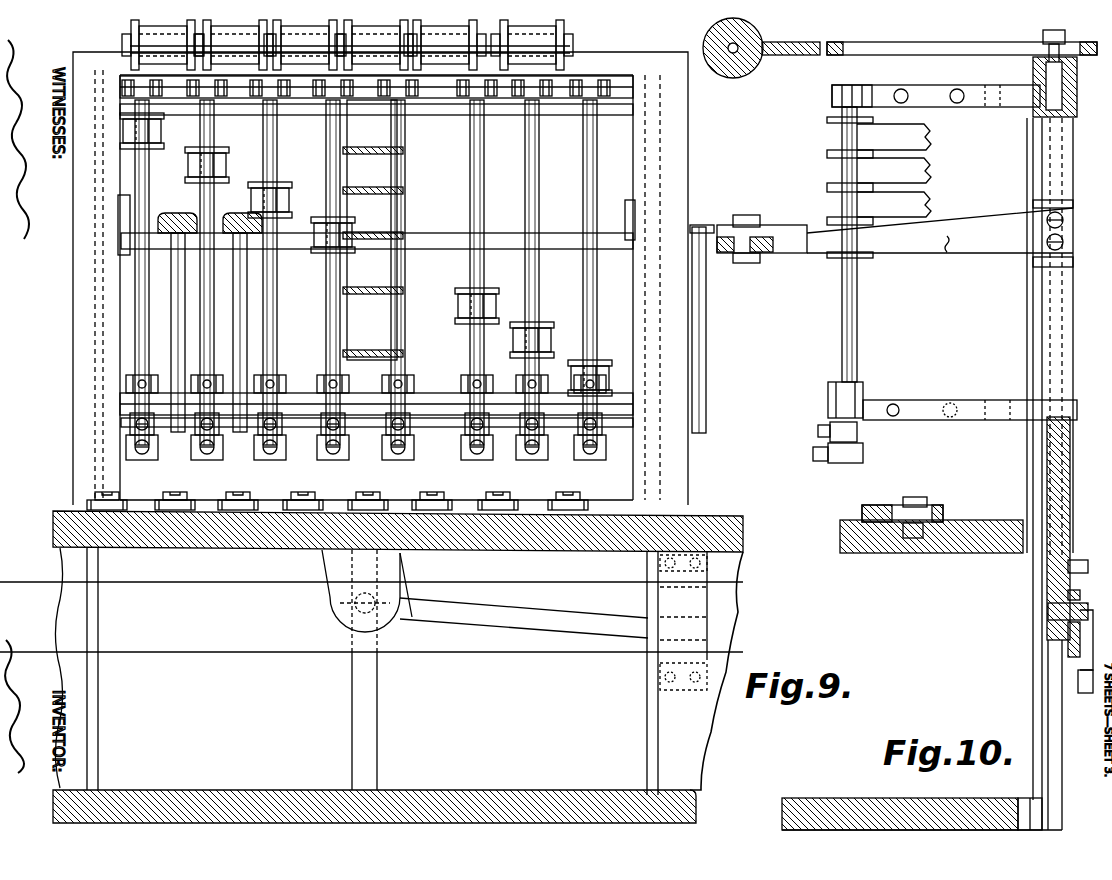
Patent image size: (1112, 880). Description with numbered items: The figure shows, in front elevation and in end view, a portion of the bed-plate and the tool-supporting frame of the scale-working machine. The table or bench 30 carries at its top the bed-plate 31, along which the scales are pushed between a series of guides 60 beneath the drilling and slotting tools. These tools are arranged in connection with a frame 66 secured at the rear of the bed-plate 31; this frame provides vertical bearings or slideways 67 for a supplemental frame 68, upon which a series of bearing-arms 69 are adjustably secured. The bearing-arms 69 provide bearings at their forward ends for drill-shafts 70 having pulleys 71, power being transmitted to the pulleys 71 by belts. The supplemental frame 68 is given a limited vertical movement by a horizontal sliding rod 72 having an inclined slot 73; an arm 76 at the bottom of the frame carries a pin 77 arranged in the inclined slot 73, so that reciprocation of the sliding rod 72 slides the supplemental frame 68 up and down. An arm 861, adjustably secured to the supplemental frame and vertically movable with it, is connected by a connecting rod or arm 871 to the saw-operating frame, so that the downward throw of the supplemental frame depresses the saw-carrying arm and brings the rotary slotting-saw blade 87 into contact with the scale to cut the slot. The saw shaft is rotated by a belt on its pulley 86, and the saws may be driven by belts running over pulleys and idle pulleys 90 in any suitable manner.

In FIG. 9, the table or bench 30 is at (695, 673).
In FIG. 10, the table or bench 30 is at (1049, 640).
In FIG. 9, the bed-plate 31 is at (240, 544).
In FIG. 10, the bed-plate 31 is at (968, 548).
In FIG. 10, the guides 60 is at (863, 510).
In FIG. 9, the frame 66 is at (77, 418).
In FIG. 10, the frame 66 is at (1024, 317).
In FIG. 9, the vertical bearings or slideways 67 is at (113, 347).
In FIG. 10, the vertical bearings or slideways 67 is at (1038, 330).
In FIG. 9, the supplemental frame 68 is at (621, 432).
In FIG. 10, the supplemental frame 68 is at (1045, 355).
In FIG. 9, the bearing-arms 69 is at (132, 78).
In FIG. 10, the bearing-arms 69 is at (983, 98).
In FIG. 9, the drill-shafts 70 is at (592, 193).
In FIG. 10, the drill-shafts 70 is at (851, 328).
In FIG. 9, the pulleys 71 is at (492, 289).
In FIG. 10, the pulleys 71 is at (837, 258).
In FIG. 9, the horizontal sliding rod 72 is at (371, 685).
In FIG. 10, the horizontal sliding rod 72 is at (1068, 650).
In FIG. 9, the inclined slot 73 is at (524, 618).
In FIG. 10, the inclined slot 73 is at (1050, 631).
In FIG. 9, the arm 76 is at (417, 477).
In FIG. 10, the arm 76 is at (1067, 528).
In FIG. 9, the pin 77 is at (353, 605).
In FIG. 10, the pin 77 is at (1048, 612).
In FIG. 9, the pulley 86 is at (240, 283).
In FIG. 9, the rotary slotting-saw blade 87 is at (168, 213).
In FIG. 9, the idle pulleys 90 is at (347, 45).
In FIG. 10, the arm 861 is at (706, 352).
In FIG. 10, the connecting rod or arm 871 is at (723, 226).